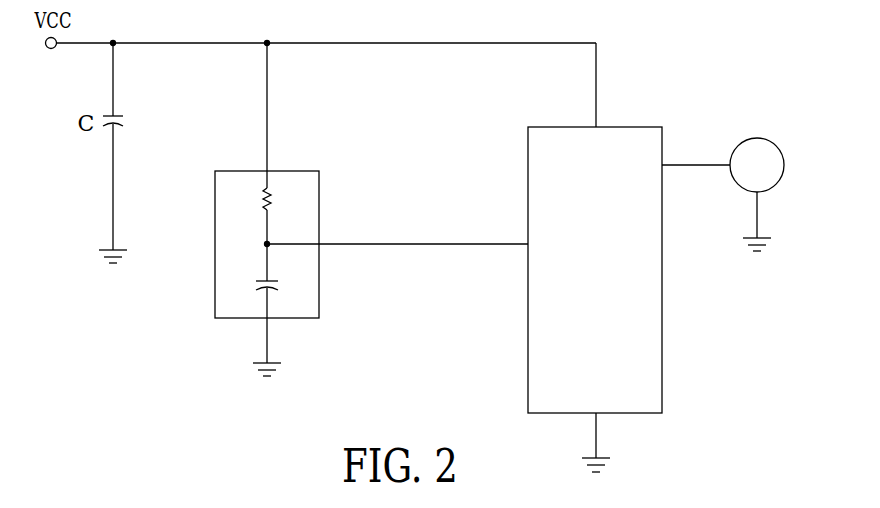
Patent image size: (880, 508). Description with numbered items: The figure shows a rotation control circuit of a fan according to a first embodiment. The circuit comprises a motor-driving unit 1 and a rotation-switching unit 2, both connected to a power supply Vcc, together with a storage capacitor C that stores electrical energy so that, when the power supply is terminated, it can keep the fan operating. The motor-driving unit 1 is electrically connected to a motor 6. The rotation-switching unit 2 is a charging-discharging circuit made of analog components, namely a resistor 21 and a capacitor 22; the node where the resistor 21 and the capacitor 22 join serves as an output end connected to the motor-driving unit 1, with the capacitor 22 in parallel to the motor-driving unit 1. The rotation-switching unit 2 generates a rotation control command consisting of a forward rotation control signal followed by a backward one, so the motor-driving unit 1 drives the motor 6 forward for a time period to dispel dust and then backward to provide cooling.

The motor-driving unit 1 is at (640, 408).
The rotation-switching unit 2 is at (313, 298).
The resistor 21 is at (273, 193).
The capacitor 22 is at (263, 288).
The motor 6 is at (742, 138).